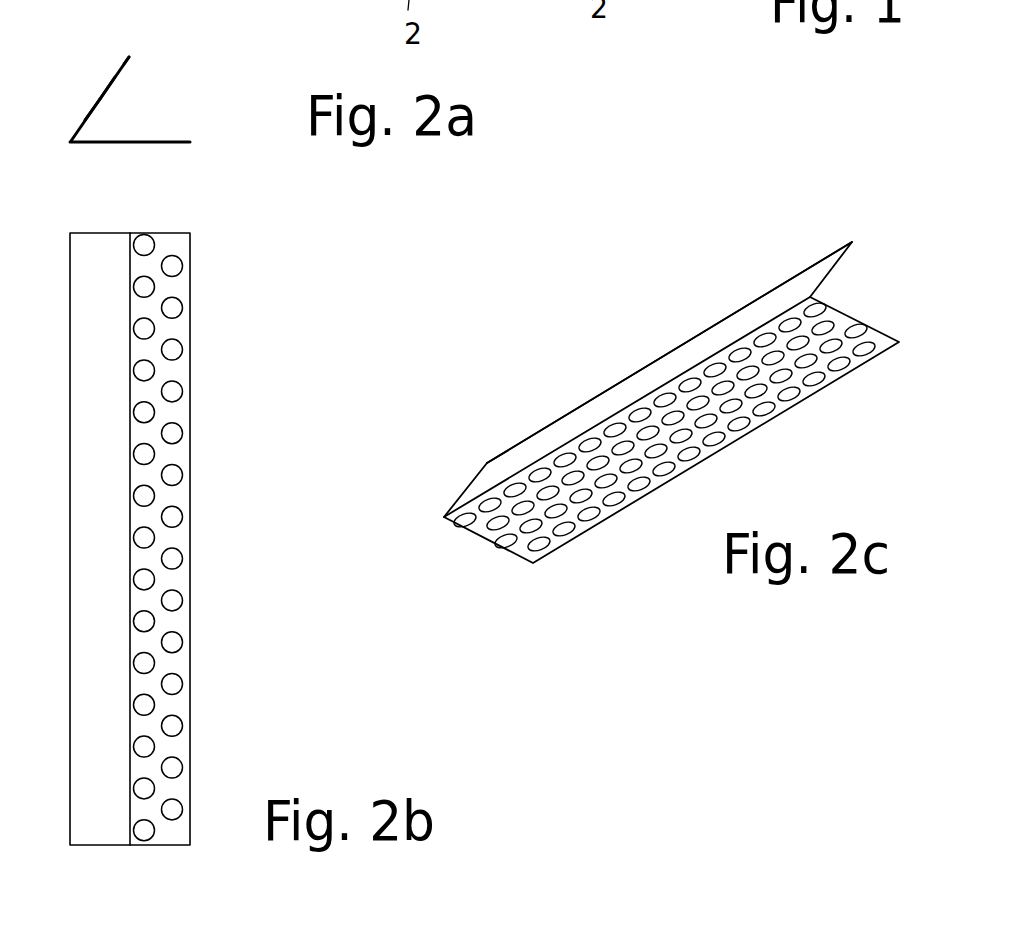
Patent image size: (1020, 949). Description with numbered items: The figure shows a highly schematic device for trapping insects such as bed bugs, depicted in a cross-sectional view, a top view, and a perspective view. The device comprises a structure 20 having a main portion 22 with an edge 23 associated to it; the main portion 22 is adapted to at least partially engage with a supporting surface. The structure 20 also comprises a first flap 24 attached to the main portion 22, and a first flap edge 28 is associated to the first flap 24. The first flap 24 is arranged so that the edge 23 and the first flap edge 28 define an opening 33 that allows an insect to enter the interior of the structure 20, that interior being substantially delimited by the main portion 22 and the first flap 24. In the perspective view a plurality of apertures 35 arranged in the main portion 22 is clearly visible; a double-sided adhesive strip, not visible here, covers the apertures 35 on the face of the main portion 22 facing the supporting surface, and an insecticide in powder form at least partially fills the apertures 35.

In FIG. 2A, the structure 20 is at (189, 97).
In FIG. 2B, the structure 20 is at (224, 539).
In FIG. 2C, the structure 20 is at (619, 380).
In FIG. 2A, the main portion 22 is at (115, 152).
In FIG. 2C, the main portion 22 is at (493, 552).
In FIG. 2A, the edge 23 is at (195, 133).
In FIG. 2A, the first flap 24 is at (97, 87).
In FIG. 2C, the first flap 24 is at (619, 339).
In FIG. 2A, the first flap edge 28 is at (132, 53).
In FIG. 2A, the opening 33 is at (138, 95).
In FIG. 2C, the opening 33 is at (863, 298).
In FIG. 2B, the apertures 35 is at (181, 310).
In FIG. 2C, the apertures 35 is at (543, 475).